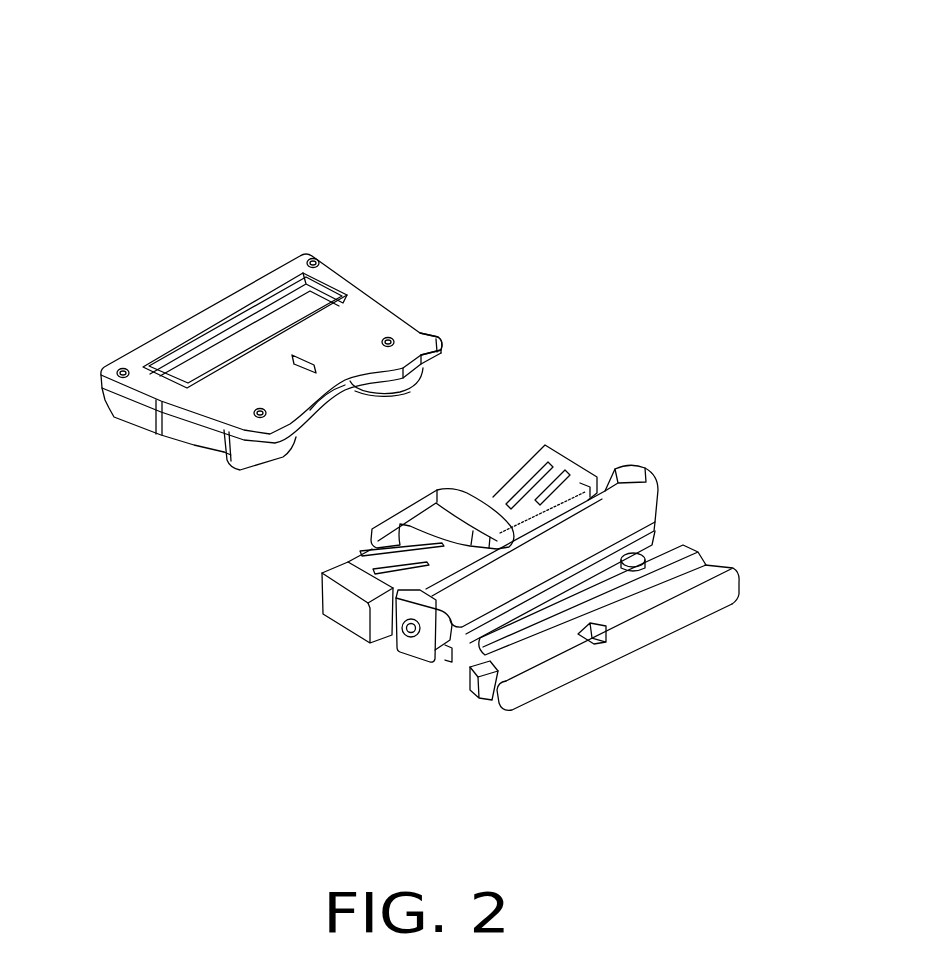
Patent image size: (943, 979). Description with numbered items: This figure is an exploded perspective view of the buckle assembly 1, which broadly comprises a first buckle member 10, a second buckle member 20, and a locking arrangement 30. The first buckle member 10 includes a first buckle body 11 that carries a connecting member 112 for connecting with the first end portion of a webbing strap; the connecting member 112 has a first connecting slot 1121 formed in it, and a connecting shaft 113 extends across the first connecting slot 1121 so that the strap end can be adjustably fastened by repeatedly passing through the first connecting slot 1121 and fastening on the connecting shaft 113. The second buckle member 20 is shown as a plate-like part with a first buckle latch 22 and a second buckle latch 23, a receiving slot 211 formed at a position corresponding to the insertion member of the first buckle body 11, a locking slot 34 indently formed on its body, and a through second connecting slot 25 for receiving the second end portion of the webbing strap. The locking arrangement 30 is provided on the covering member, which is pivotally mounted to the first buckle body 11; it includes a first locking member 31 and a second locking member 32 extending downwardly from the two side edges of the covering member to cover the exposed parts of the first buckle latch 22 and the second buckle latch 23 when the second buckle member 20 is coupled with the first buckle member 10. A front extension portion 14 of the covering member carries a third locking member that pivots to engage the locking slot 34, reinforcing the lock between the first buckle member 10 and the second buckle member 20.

The buckle assembly 1 is at (178, 95).
The first buckle member 10 is at (748, 478).
The first buckle body 11 is at (468, 653).
The connecting member 112 is at (606, 640).
The connecting shaft 113 is at (522, 650).
The first connecting slot 1121 is at (690, 570).
The front extension portion 14 is at (472, 480).
The second buckle member 20 is at (462, 217).
The receiving slot 211 is at (323, 437).
The first buckle latch 22 is at (430, 333).
The second buckle latch 23 is at (233, 447).
The second connecting slot 25 is at (310, 302).
The locking arrangement 30 is at (627, 404).
The first locking member 31 is at (560, 450).
The second locking member 32 is at (342, 610).
The locking slot 34 is at (262, 352).